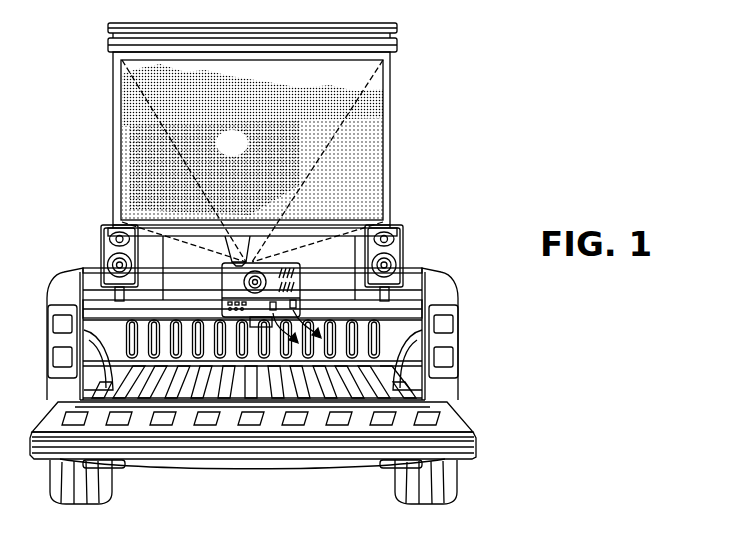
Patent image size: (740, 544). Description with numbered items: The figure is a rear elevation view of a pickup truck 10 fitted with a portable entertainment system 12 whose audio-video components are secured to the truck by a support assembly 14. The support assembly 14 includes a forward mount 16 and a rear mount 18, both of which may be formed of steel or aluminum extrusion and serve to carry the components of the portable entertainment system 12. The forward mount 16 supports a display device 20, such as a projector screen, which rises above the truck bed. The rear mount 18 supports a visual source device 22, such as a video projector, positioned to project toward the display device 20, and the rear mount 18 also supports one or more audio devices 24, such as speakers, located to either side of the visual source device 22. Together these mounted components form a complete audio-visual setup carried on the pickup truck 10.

The pickup truck 10 is at (445, 290).
The portable entertainment system 12 is at (437, 111).
The support assembly 14 is at (268, 342).
The forward mount 16 is at (163, 240).
The rear mount 18 is at (385, 313).
The display device 20 is at (391, 121).
The visual source device 22 is at (228, 312).
The audio devices 24 is at (100, 235).